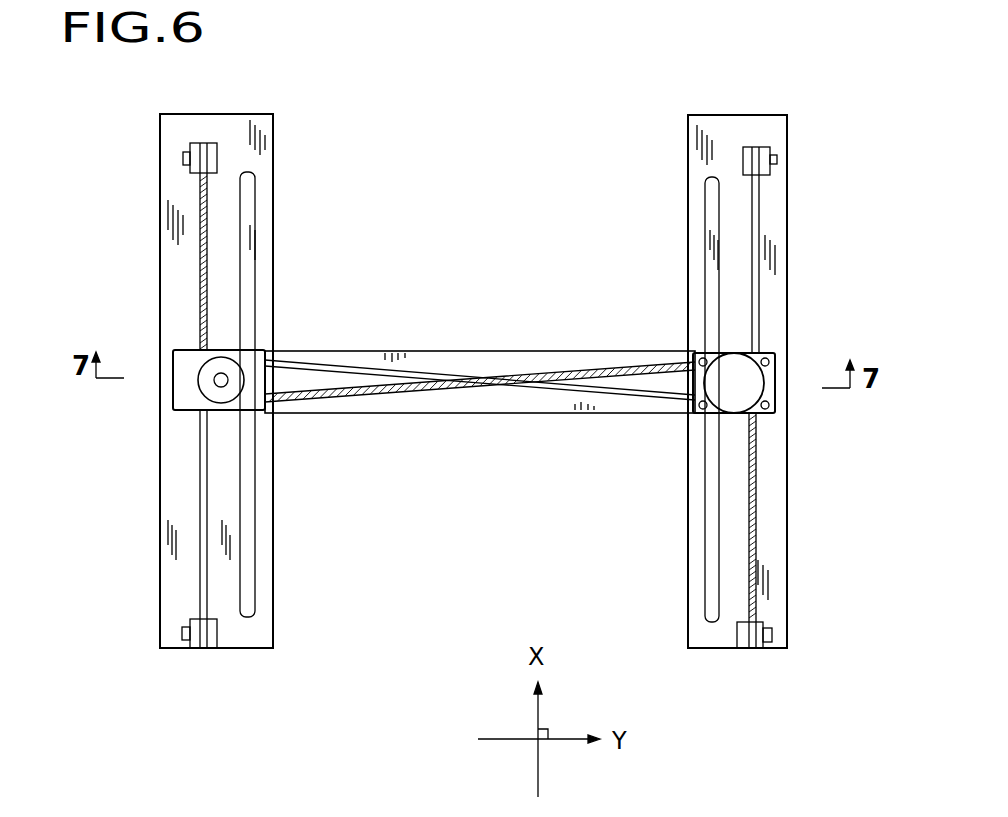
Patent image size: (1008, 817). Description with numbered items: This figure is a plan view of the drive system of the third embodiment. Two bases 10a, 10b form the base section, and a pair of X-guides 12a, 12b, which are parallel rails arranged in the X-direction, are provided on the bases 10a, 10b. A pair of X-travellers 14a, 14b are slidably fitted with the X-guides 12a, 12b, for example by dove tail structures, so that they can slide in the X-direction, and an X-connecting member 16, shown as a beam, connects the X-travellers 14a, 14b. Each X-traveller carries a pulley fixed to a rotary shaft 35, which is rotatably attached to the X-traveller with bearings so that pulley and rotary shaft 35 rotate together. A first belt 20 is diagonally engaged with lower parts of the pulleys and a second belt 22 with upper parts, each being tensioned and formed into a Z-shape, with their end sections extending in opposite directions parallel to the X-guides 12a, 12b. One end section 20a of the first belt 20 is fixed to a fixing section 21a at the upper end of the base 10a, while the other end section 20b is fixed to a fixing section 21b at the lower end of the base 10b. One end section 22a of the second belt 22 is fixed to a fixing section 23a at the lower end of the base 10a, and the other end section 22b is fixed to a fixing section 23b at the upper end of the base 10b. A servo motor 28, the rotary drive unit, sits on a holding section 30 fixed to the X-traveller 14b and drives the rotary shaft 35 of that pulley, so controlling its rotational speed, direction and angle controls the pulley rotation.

The base 10a is at (170, 240).
The base 10b is at (780, 224).
The X-guide 12a is at (250, 208).
The X-guide 12b is at (712, 205).
The X-traveller 14a is at (196, 352).
The X-traveller 14b is at (770, 348).
The X-connecting member 16 is at (498, 358).
The first belt 20 is at (398, 388).
The end section of the first belt 20a is at (190, 170).
The end section of the first belt 20b is at (768, 624).
The fixing section 21a is at (192, 150).
The fixing section 21b is at (770, 644).
The second belt 22 is at (357, 369).
The end section of the second belt 22a is at (190, 626).
The end section of the second belt 22b is at (770, 172).
The fixing section 23a is at (190, 641).
The fixing section 23b is at (770, 152).
The servo motor 28 is at (752, 380).
The holding section 30 is at (775, 400).
The rotary shaft 35 is at (221, 380).